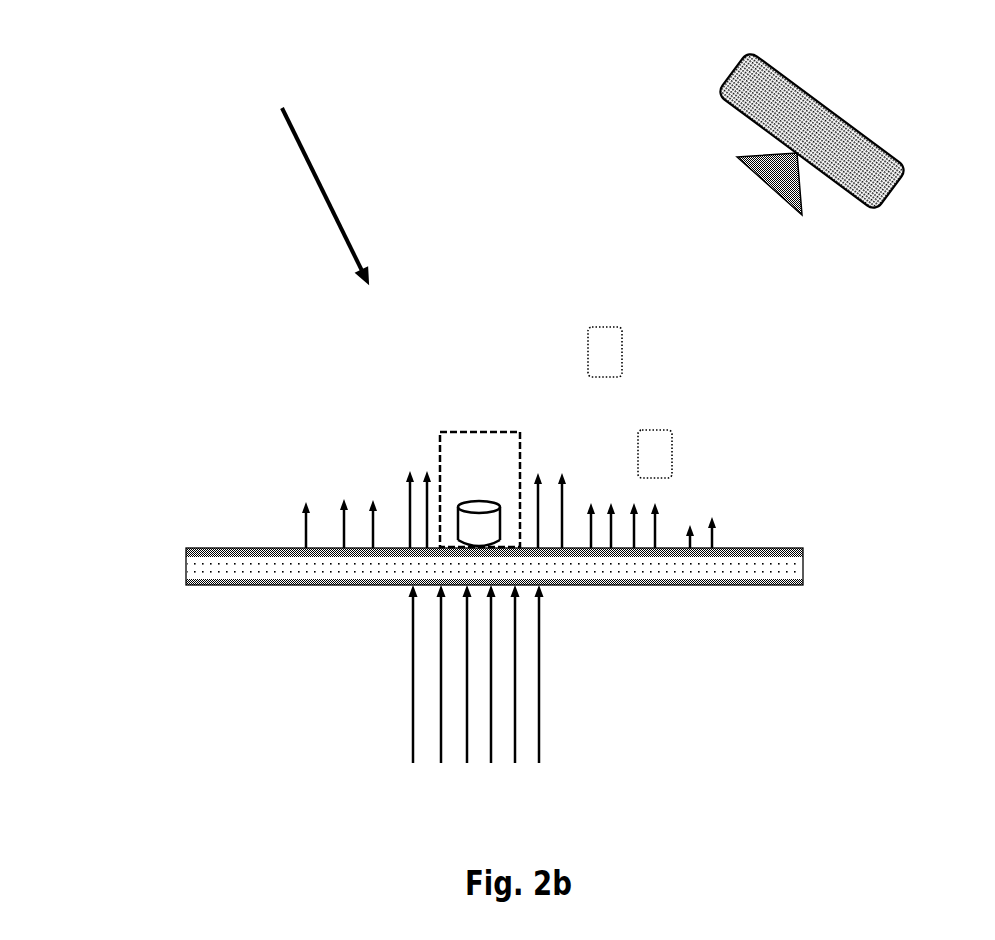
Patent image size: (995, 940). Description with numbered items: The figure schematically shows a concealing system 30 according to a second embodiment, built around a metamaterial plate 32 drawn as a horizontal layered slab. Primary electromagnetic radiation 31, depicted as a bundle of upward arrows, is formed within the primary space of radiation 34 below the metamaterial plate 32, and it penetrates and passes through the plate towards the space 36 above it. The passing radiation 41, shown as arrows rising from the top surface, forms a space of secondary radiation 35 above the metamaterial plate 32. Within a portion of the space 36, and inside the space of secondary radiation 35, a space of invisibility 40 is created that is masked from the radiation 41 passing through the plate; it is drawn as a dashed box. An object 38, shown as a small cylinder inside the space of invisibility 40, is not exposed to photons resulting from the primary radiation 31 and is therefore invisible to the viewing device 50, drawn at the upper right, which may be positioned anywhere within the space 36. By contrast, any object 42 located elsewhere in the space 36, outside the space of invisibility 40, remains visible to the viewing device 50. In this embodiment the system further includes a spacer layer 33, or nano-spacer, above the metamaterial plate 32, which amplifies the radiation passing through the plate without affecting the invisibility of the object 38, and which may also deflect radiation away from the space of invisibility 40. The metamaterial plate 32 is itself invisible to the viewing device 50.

The concealing system 30 is at (314, 176).
The primary electromagnetic radiation 31 is at (412, 723).
The metamaterial plate 32 is at (295, 565).
The spacer layer 33 is at (750, 552).
The primary space of radiation 34 is at (632, 633).
The space of secondary radiation 35 is at (327, 512).
The space above the metamaterial plate 36 is at (462, 373).
The object 38 is at (490, 502).
The space of invisibility 40 is at (435, 453).
The passing radiation 41 is at (407, 488).
The object 42 is at (602, 357).
The viewing device 50 is at (795, 120).